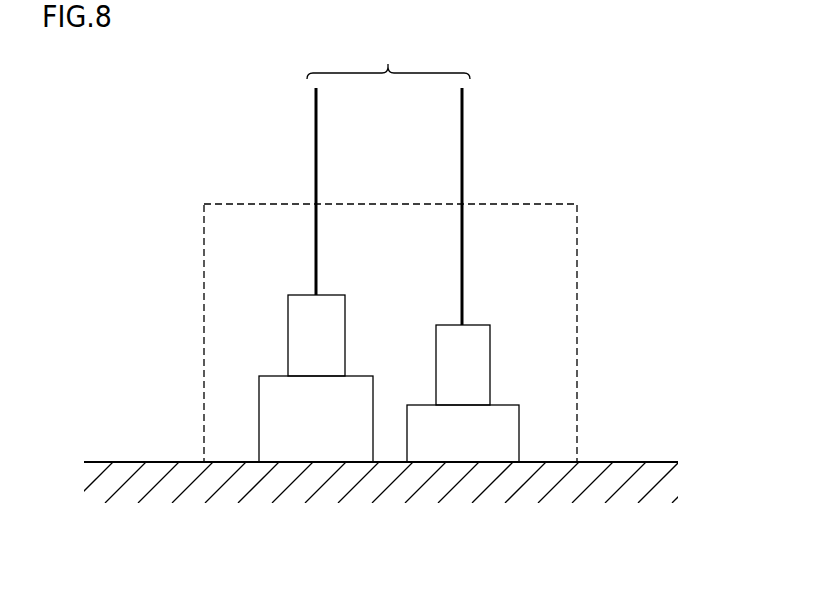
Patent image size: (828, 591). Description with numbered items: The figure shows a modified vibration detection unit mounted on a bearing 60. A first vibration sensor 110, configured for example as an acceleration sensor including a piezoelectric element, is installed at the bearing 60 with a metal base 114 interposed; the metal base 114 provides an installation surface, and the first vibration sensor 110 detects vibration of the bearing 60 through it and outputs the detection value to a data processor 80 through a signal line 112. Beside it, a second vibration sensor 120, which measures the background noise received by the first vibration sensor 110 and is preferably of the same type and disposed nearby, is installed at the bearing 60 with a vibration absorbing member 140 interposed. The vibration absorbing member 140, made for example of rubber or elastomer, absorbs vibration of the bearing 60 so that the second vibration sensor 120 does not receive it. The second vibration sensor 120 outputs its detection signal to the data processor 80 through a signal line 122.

The data processor 80 is at (389, 58).
The signal line 112 is at (314, 145).
The signal line 122 is at (465, 146).
The first vibration sensor 110 is at (287, 333).
The metal base 114 is at (258, 422).
The second vibration sensor 120 is at (491, 350).
The vibration absorbing member 140 is at (520, 433).
The bearing 60 is at (645, 462).